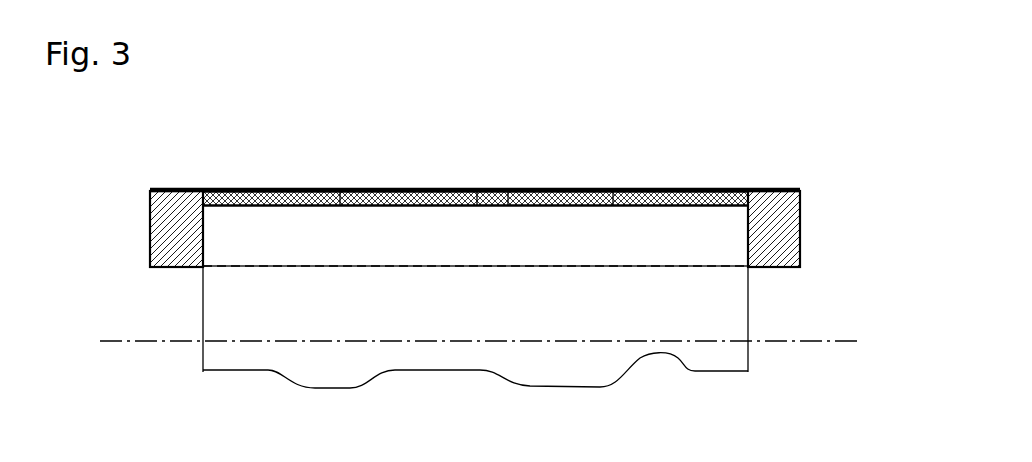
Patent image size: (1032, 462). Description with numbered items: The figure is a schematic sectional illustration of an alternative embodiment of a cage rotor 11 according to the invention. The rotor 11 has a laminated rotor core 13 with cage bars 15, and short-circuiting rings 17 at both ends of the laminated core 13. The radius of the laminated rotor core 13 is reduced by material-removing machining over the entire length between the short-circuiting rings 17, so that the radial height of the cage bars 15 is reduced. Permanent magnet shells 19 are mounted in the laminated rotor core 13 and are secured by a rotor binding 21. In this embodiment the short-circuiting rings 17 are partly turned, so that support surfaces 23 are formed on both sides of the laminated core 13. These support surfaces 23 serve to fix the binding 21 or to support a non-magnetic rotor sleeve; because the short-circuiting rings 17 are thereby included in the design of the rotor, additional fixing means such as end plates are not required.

The rotor 11 is at (130, 184).
The laminated rotor core 13 is at (726, 288).
The cage bars 15 is at (600, 228).
The short-circuiting rings 17 is at (772, 223).
The permanent magnet shells 19 is at (510, 189).
The rotor binding 21 is at (302, 189).
The support surfaces 23 is at (185, 205).